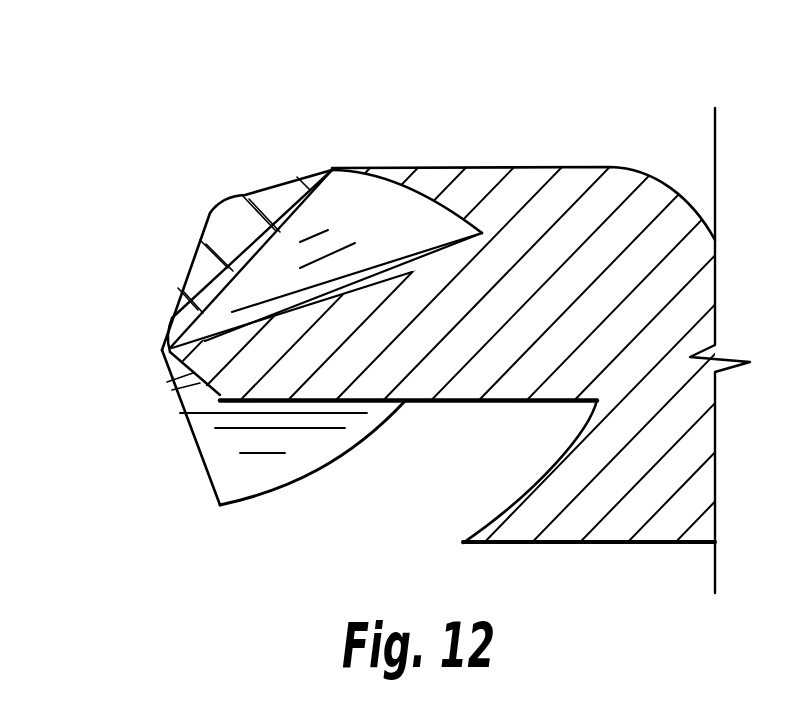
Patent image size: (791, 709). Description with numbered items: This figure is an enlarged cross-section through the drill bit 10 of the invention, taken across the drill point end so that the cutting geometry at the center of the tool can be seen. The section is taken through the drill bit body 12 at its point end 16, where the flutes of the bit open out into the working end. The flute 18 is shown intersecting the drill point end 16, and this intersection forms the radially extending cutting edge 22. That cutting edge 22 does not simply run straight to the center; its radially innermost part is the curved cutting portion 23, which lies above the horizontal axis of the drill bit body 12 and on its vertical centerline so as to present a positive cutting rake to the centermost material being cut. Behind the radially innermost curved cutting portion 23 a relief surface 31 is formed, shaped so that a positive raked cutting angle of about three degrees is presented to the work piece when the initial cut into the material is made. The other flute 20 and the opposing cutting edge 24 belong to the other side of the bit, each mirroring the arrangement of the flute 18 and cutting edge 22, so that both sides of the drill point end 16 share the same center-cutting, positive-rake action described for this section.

The drill bit 10 is at (448, 152).
The drill bit body 12 is at (535, 165).
The drill point end 16 is at (172, 310).
The flute 18 is at (250, 477).
The flute 20 is at (350, 198).
The cutting edge 22 is at (195, 465).
The radially innermost curved cutting portion 23 is at (165, 367).
The cutting edge 24 is at (195, 250).
The relief surface 31 is at (208, 388).